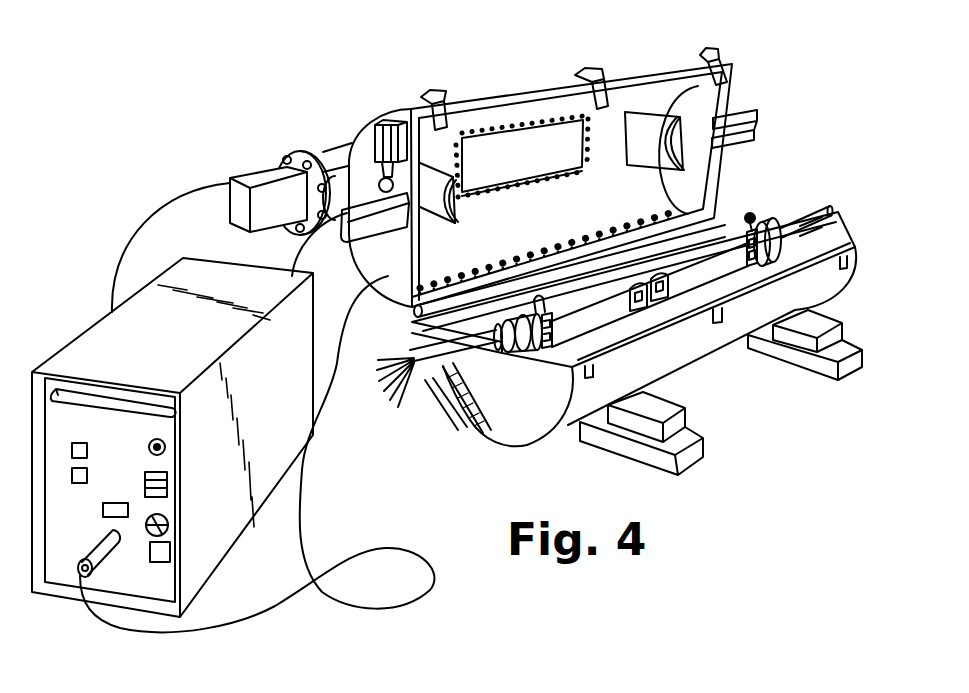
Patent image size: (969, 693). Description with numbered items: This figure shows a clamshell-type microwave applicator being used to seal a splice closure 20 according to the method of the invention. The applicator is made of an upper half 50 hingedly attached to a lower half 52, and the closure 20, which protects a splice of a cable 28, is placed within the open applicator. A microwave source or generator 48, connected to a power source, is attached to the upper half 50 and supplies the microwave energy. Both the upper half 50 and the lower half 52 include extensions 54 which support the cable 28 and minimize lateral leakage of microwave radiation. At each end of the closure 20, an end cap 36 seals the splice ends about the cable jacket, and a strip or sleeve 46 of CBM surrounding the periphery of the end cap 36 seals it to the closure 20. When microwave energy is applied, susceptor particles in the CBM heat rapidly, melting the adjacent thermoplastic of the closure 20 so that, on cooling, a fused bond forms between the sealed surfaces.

The splice closure 20 is at (751, 212).
The cable 28 is at (827, 205).
The end cap 36 is at (528, 352).
The strip or sleeve 46 is at (112, 328).
The microwave source or generator 48 is at (248, 180).
The upper half of the applicator 50 is at (507, 95).
The lower half of the applicator 52 is at (688, 348).
The extension 54 is at (745, 117).